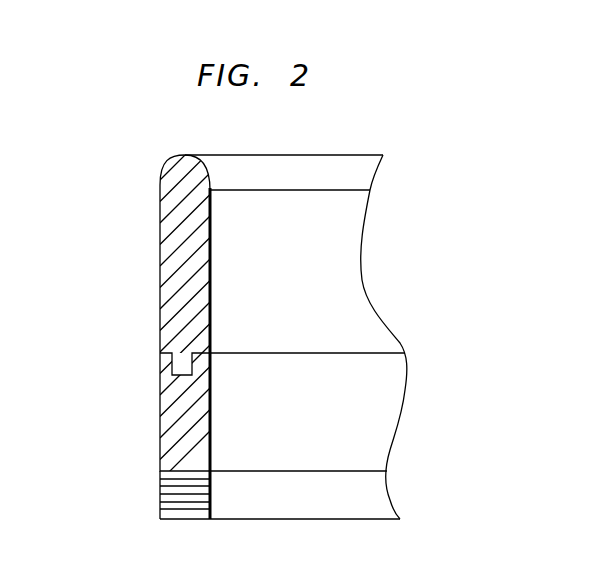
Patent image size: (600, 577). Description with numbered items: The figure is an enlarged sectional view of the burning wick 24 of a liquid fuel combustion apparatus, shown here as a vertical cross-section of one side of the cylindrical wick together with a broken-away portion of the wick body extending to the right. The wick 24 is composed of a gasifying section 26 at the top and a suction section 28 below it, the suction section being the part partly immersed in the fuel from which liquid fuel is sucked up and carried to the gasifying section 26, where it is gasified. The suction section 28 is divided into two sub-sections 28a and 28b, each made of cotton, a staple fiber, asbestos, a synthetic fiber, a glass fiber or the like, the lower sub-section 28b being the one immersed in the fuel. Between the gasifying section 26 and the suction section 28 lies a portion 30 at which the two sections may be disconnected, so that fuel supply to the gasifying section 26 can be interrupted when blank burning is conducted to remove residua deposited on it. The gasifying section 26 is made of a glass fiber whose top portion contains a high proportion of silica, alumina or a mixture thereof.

The wick 24 is at (135, 211).
The gasifying section 26 is at (180, 257).
The suction section 28 is at (229, 436).
The sub-section 28a is at (178, 423).
The sub-section 28b is at (170, 493).
The portion 30 is at (175, 368).